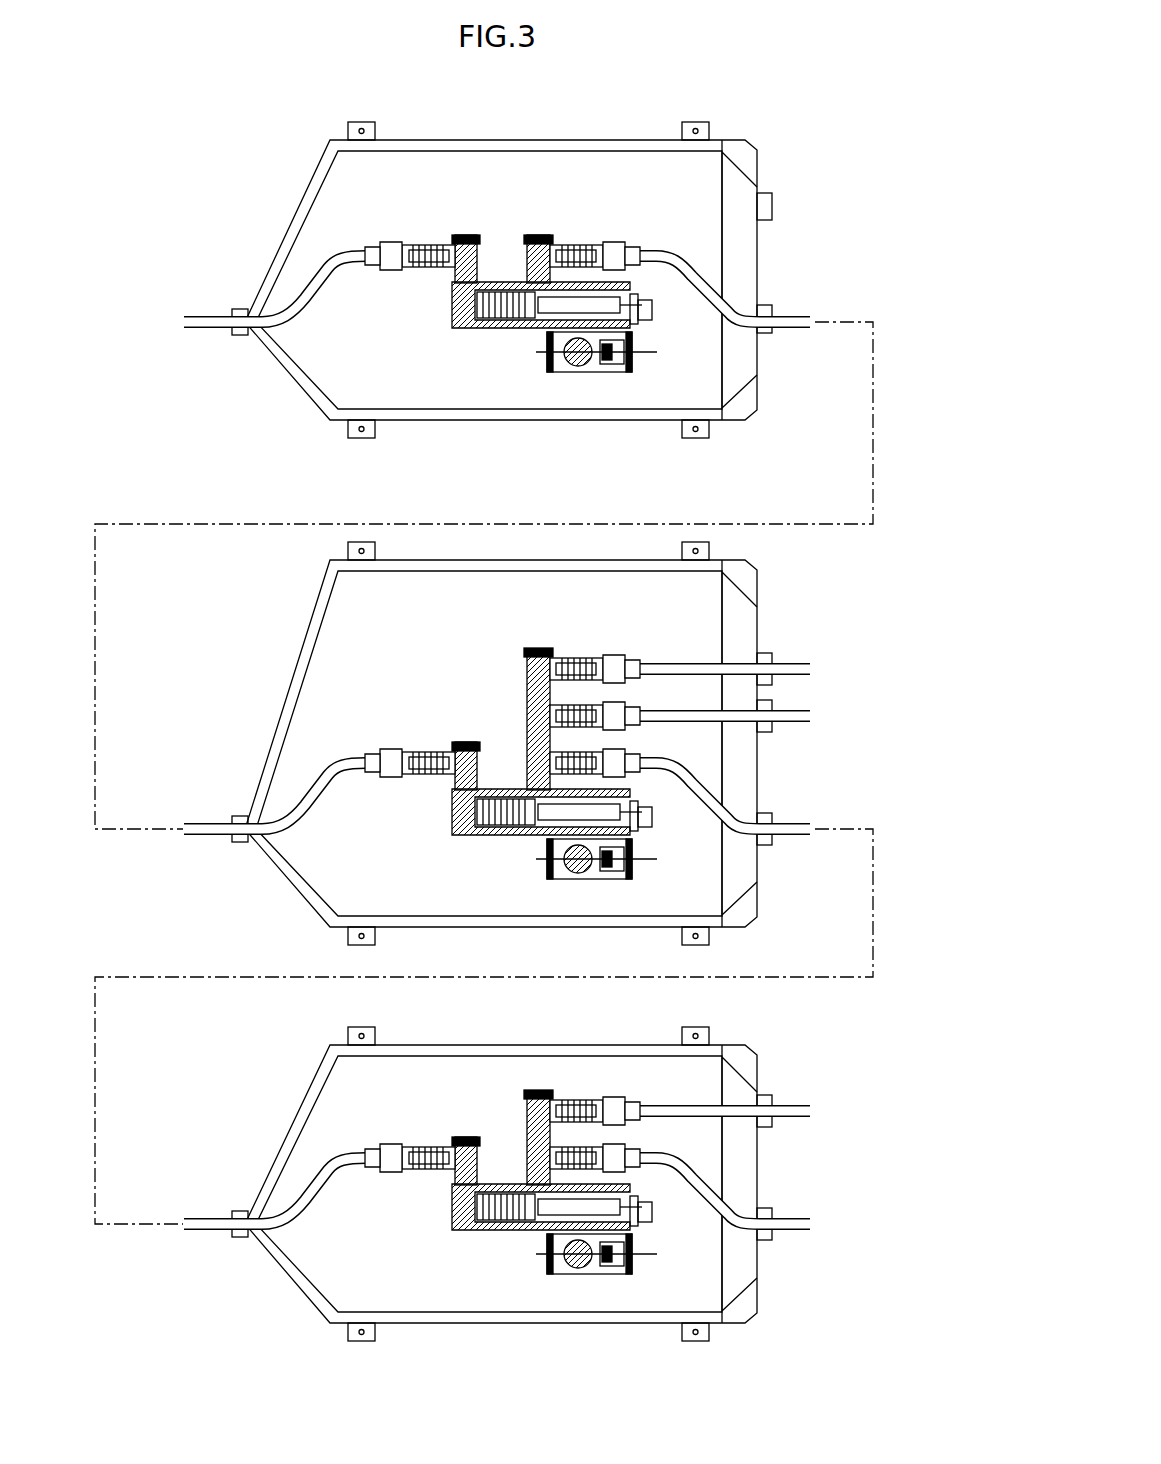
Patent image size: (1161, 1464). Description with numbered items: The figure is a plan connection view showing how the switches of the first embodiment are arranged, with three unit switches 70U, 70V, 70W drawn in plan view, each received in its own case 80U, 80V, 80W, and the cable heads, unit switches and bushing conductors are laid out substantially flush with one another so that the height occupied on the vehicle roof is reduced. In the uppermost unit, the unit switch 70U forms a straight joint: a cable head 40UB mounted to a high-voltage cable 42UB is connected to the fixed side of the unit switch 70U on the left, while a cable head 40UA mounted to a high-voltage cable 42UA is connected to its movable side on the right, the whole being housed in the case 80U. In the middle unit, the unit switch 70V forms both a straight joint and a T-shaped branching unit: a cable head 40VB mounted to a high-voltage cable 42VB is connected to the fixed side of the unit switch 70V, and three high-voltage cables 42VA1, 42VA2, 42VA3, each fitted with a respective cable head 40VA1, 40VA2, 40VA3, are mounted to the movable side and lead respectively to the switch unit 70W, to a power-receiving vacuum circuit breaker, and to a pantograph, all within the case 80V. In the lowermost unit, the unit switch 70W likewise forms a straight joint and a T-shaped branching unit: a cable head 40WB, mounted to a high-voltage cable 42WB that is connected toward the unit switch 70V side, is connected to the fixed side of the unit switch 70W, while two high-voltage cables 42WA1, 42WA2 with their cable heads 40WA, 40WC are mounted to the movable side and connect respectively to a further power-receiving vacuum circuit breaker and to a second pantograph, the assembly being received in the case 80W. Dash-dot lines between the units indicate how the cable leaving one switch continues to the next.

The case 80U is at (735, 118).
The case 80V is at (752, 542).
The case 80W is at (745, 1022).
The unit switch 70U is at (502, 338).
The unit switch 70V is at (502, 840).
The unit switch 70W is at (502, 1305).
The cable head 40UB is at (310, 282).
The cable head 40UA is at (622, 240).
The cable head 40VB is at (391, 750).
The cable head 40VA1 is at (580, 748).
The cable head 40VA2 is at (573, 700).
The cable head 40VA3 is at (568, 658).
The cable head 40WB is at (391, 1147).
The cable head 40WC is at (573, 1090).
The cable head 40WA is at (603, 1140).
The high-voltage cable 42UB is at (200, 318).
The high-voltage cable 42UA is at (703, 273).
The high-voltage cable 42VB is at (219, 820).
The high-voltage cable 42VA1 is at (812, 824).
The high-voltage cable 42VA2 is at (815, 717).
The high-voltage cable 42VA3 is at (815, 667).
The high-voltage cable 42WB is at (220, 1220).
The high-voltage cable 42WA1 is at (787, 1226).
The high-voltage cable 42WA2 is at (793, 1109).